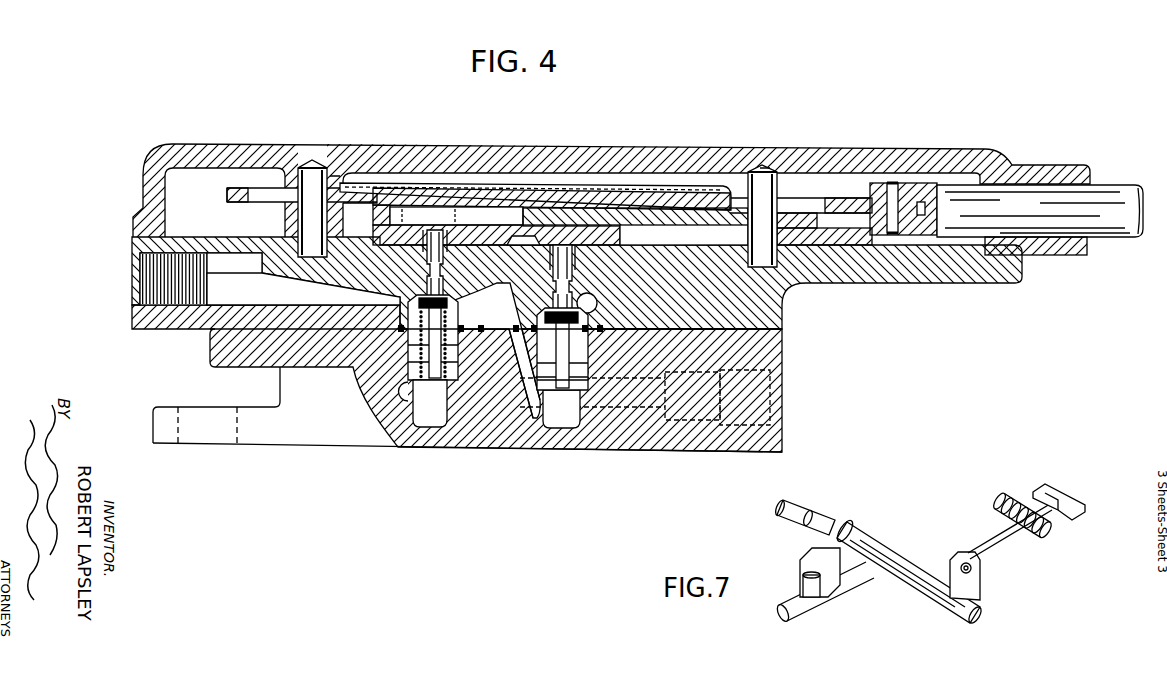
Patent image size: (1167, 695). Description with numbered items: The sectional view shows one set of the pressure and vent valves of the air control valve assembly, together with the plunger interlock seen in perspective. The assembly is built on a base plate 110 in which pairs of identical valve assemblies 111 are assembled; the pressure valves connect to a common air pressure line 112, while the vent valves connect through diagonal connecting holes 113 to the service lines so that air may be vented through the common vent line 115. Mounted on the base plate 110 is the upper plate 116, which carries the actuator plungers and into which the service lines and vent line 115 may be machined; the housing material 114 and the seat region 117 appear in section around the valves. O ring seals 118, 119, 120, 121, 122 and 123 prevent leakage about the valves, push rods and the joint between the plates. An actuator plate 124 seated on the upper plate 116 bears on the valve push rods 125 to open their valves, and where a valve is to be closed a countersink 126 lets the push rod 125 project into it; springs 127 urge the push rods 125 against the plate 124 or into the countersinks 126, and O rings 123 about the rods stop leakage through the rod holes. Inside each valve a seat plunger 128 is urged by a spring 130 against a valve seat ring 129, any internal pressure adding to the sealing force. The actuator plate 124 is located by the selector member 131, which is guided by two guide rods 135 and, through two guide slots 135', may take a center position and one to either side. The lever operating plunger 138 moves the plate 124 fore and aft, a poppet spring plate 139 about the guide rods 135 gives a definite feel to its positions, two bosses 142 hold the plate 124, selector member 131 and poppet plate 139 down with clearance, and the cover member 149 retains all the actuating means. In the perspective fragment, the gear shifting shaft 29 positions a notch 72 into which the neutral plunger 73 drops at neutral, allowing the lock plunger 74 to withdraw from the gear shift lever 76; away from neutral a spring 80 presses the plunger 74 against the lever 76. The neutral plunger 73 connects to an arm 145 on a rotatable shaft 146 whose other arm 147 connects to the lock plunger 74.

In FIG. 4, the base plate 110 is at (165, 445).
In FIG. 4, the valve assembly 111 is at (530, 420).
In FIG. 4, the common air pressure line 112 is at (387, 420).
In FIG. 4, the diagonal connecting hole 113 is at (497, 418).
In FIG. 4, the upper housing block 114 is at (577, 283).
In FIG. 4, the common vent line 115 is at (590, 282).
In FIG. 4, the upper plate 116 is at (135, 317).
In FIG. 4, the seat plate 117 is at (592, 354).
In FIG. 4, the O ring seal 118 is at (405, 349).
In FIG. 4, the O ring seal 119 is at (382, 295).
In FIG. 4, the O ring seal 120 is at (497, 350).
In FIG. 4, the O ring seal 121 is at (598, 310).
In FIG. 4, the O ring seal 122 is at (602, 328).
In FIG. 4, the O ring seal 123 is at (422, 270).
In FIG. 4, the actuator plate 124 is at (387, 199).
In FIG. 4, the valve push rod 125 is at (440, 230).
In FIG. 4, the countersink 126 is at (458, 220).
In FIG. 4, the spring 127 is at (425, 312).
In FIG. 4, the valve seat plunger 128 is at (385, 416).
In FIG. 4, the valve seat ring 129 is at (393, 388).
In FIG. 4, the spring 130 is at (420, 428).
In FIG. 4, the selector member 131 is at (240, 187).
In FIG. 4, the guide rod 135 is at (548, 190).
In FIG. 4, the guide slot 135' is at (537, 174).
In FIG. 4, the lever operating plunger 138 is at (1112, 185).
In FIG. 4, the poppet spring plate 139 is at (578, 183).
In FIG. 4, the boss 142 is at (337, 182).
In FIG. 4, the cover member 149 is at (148, 170).
In FIG. 7, the gear shifting shaft 29 is at (855, 585).
In FIG. 7, the notch 72 is at (797, 578).
In FIG. 7, the neutral plunger 73 is at (818, 600).
In FIG. 7, the lock plunger 74 is at (1008, 543).
In FIG. 7, the gear shift lever 76 is at (1075, 495).
In FIG. 7, the spring 80 is at (1016, 514).
In FIG. 7, the arm 145 is at (812, 540).
In FIG. 7, the rotatable shaft 146 is at (900, 562).
In FIG. 7, the arm 147 is at (982, 586).